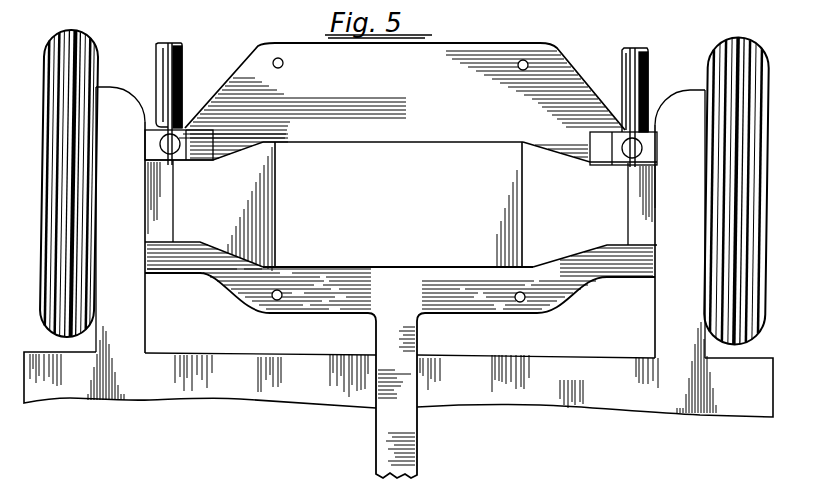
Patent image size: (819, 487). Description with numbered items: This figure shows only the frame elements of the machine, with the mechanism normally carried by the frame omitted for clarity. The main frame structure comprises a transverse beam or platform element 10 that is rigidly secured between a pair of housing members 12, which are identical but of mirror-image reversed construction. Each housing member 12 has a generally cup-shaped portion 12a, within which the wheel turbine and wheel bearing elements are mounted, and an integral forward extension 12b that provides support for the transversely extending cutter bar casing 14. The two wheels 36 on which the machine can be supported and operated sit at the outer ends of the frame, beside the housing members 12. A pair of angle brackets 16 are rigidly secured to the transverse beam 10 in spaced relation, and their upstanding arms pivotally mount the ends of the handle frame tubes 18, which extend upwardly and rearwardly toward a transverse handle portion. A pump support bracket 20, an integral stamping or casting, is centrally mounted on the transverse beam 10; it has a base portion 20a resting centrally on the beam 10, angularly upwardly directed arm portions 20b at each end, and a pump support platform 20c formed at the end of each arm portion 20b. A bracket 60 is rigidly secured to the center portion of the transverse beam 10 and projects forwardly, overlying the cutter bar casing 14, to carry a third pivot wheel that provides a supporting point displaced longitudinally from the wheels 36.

The transverse beam 10 is at (533, 102).
The housing member 12 is at (128, 295).
The cup-shaped portion 12a is at (104, 97).
The forward extension 12b is at (123, 338).
The cutter bar casing 14 is at (477, 396).
The angle bracket 16 is at (181, 130).
The handle frame tube 18 is at (185, 53).
The pump support bracket 20 is at (478, 100).
The base portion 20a is at (445, 238).
The arm portion 20b is at (227, 167).
The pump support platform 20c is at (160, 197).
The wheel 36 is at (58, 45).
The bracket 60 is at (400, 337).